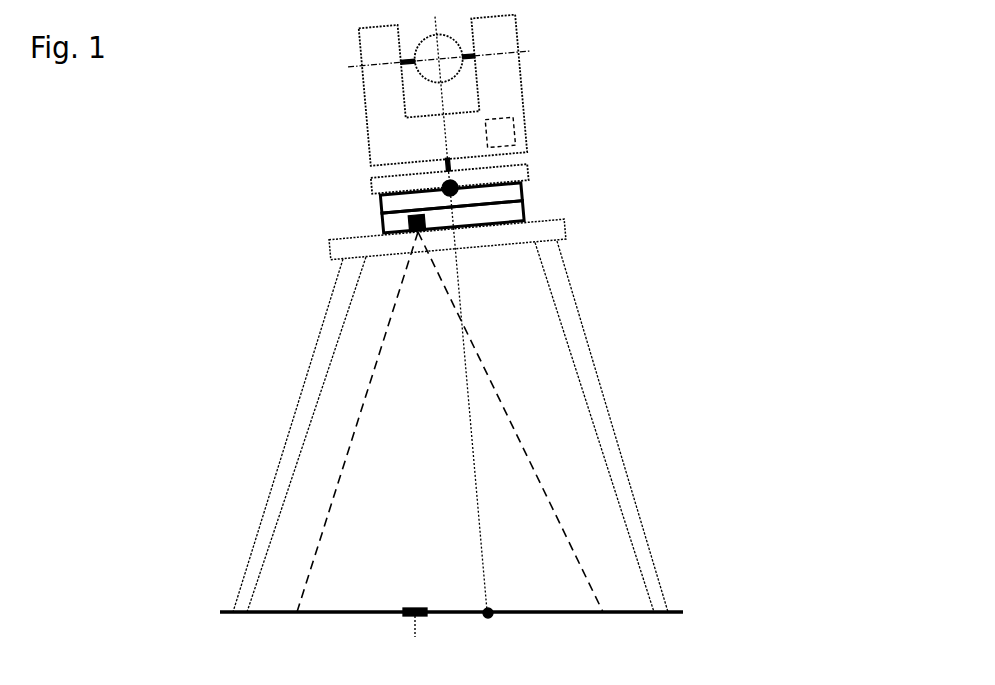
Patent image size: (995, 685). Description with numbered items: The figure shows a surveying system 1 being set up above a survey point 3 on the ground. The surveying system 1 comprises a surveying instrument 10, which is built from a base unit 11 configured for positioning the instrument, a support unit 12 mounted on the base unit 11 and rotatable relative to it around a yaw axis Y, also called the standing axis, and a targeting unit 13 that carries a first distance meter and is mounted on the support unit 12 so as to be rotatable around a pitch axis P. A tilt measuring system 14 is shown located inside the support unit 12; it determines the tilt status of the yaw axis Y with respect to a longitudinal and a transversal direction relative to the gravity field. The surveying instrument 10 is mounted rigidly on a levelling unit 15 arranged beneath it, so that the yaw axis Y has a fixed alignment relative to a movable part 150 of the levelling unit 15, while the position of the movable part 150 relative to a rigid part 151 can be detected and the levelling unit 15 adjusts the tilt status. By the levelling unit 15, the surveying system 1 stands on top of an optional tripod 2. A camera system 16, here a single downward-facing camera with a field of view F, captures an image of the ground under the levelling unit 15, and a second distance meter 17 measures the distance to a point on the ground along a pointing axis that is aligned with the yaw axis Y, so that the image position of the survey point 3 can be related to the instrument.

The surveying system 1 is at (731, 110).
The tripod 2 is at (588, 375).
The survey point 3 is at (413, 608).
The surveying instrument 10 is at (363, 193).
The base unit 11 is at (518, 172).
The support unit 12 is at (483, 83).
The targeting unit 13 is at (447, 49).
The tilt measuring system 14 is at (510, 102).
The levelling unit 15 is at (365, 233).
The movable part 150 is at (510, 192).
The rigid part 151 is at (512, 212).
The camera system 16 is at (425, 225).
The second distance meter 17 is at (456, 194).
The pitch axis P is at (503, 50).
The yaw axis Y is at (447, 97).
The field of view F is at (447, 280).